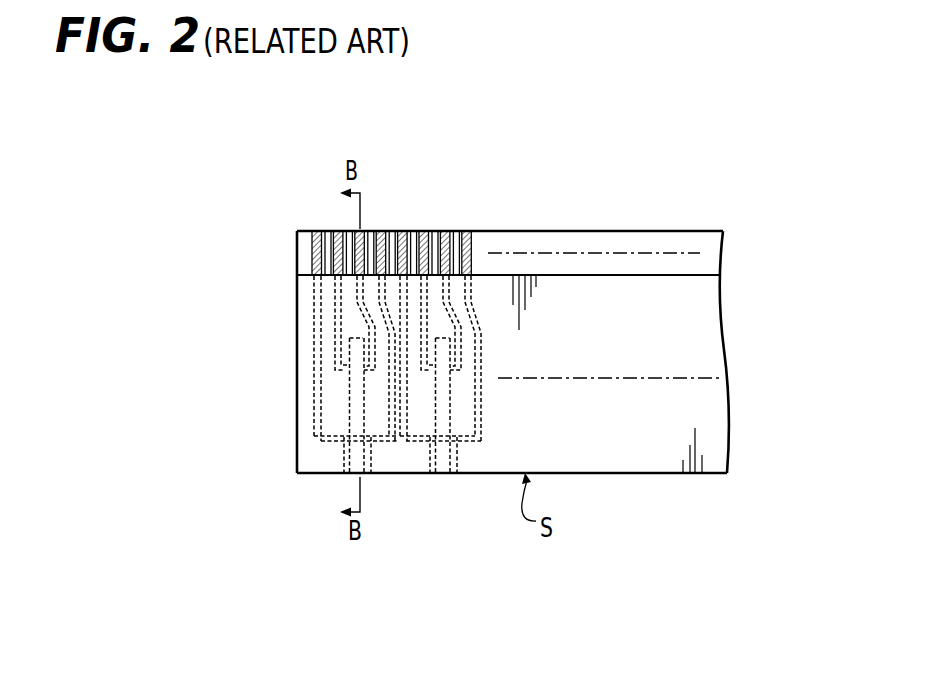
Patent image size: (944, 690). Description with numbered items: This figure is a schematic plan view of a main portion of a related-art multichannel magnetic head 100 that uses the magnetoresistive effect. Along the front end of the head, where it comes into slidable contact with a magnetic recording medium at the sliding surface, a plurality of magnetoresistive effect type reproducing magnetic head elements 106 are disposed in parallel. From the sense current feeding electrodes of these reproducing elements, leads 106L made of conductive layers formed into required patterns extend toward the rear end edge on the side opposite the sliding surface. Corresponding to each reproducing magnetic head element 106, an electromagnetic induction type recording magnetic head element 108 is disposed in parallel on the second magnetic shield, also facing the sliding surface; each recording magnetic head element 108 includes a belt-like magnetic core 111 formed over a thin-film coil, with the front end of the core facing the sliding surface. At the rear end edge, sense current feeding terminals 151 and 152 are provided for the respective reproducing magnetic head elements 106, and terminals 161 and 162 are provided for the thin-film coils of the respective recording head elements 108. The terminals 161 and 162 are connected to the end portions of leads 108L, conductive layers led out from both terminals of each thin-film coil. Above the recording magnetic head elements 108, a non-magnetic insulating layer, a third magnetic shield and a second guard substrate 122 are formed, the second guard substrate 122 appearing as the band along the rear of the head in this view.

The multichannel magnetic head 100 is at (317, 629).
The second guard substrate 122 is at (565, 275).
The sense current feeding terminal 151 is at (317, 231).
The terminal 161 is at (338, 231).
The terminal 162 is at (367, 231).
The sense current feeding terminal 152 is at (387, 228).
The lead 106L is at (382, 299).
The lead 108L is at (340, 344).
The recording magnetic head element 108 is at (348, 393).
The magnetic core 111 is at (445, 403).
The reproducing magnetic head element 106 is at (355, 450).